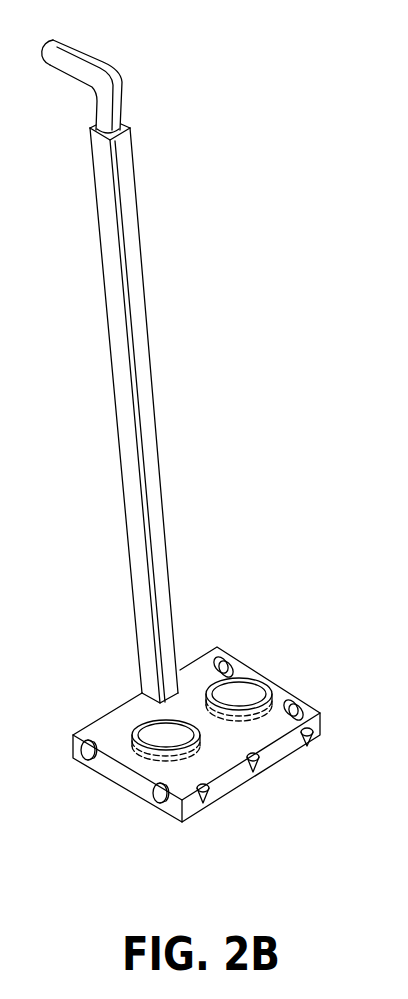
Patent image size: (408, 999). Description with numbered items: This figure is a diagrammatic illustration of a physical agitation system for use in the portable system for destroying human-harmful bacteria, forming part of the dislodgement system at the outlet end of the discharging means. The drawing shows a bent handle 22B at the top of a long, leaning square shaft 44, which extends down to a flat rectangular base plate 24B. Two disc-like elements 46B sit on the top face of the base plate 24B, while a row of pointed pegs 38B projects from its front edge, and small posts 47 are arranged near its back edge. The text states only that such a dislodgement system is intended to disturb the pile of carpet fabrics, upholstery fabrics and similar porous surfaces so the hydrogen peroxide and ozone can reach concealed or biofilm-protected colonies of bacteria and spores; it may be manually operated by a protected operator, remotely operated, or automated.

The handle 22B is at (115, 70).
The shaft 44 is at (197, 677).
The base plate 24B is at (118, 773).
The puck / disc 46B is at (152, 735).
The pegs 38B is at (207, 802).
The posts 47 is at (276, 675).